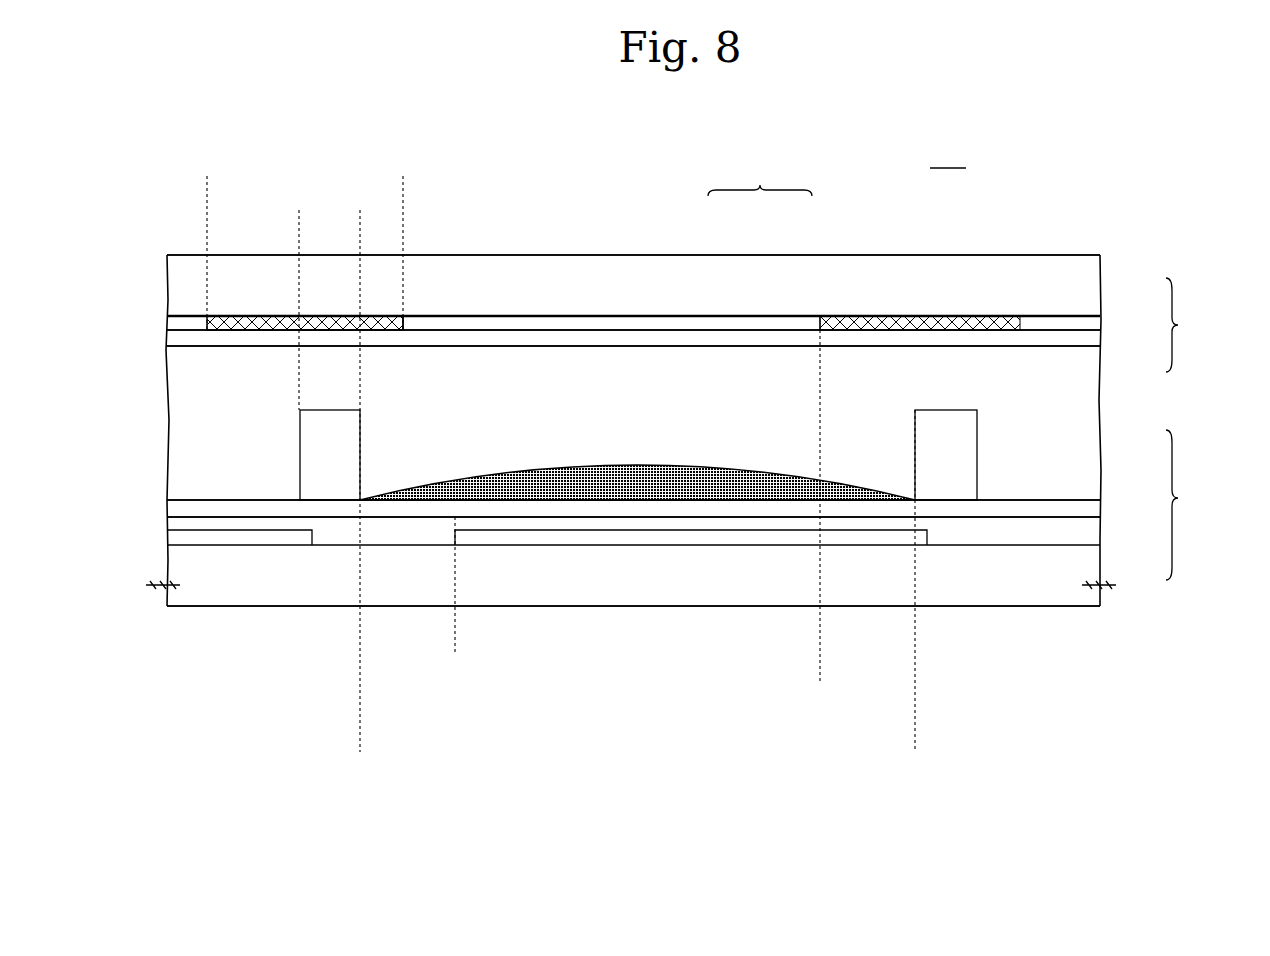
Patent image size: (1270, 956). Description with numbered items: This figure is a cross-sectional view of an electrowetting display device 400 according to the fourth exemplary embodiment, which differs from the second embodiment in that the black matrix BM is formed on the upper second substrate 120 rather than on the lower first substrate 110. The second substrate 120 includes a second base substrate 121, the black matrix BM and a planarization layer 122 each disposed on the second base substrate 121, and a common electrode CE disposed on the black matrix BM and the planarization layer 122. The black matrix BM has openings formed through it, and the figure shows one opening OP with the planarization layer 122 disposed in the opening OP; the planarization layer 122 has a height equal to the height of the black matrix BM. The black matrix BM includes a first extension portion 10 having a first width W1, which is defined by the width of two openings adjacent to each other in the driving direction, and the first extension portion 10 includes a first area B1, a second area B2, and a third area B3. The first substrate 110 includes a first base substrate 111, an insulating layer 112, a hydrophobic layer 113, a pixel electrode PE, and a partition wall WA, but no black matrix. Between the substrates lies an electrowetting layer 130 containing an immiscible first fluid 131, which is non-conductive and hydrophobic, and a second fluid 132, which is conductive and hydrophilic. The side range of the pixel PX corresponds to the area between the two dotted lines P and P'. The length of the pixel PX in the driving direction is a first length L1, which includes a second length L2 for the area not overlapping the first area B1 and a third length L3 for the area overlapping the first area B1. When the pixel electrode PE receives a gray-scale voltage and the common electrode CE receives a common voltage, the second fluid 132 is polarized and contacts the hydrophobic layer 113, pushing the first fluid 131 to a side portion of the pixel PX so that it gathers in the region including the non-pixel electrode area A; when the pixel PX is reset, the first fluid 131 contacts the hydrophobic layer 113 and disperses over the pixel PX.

The electrowetting display device 400 is at (948, 158).
The first extension portion 10 is at (240, 322).
The opening OP is at (405, 324).
The first width W1 is at (207, 183).
The first area B1 is at (207, 219).
The second area B2 is at (358, 219).
The third area B3 is at (299, 219).
The electrowetting layer 130 is at (760, 181).
The first fluid 131 is at (690, 465).
The second fluid 132 is at (785, 403).
The second base substrate 121 is at (1083, 290).
The black matrix BM is at (965, 321).
The planarization layer 122 is at (1083, 326).
The common electrode CE is at (1083, 346).
The second substrate 120 is at (1191, 325).
The partition wall WA is at (963, 438).
The pixel electrode PE is at (928, 538).
The hydrophobic layer 113 is at (1088, 508).
The insulating layer 112 is at (1088, 535).
The first base substrate 111 is at (1083, 568).
The first substrate 110 is at (1191, 505).
The first length L1 is at (360, 440).
The second length L2 is at (361, 680).
The third length L3 is at (822, 680).
The non-pixel electrode area A is at (361, 648).
The pixel PX is at (361, 725).
The dotted line P is at (361, 690).
The dotted line P' is at (916, 690).